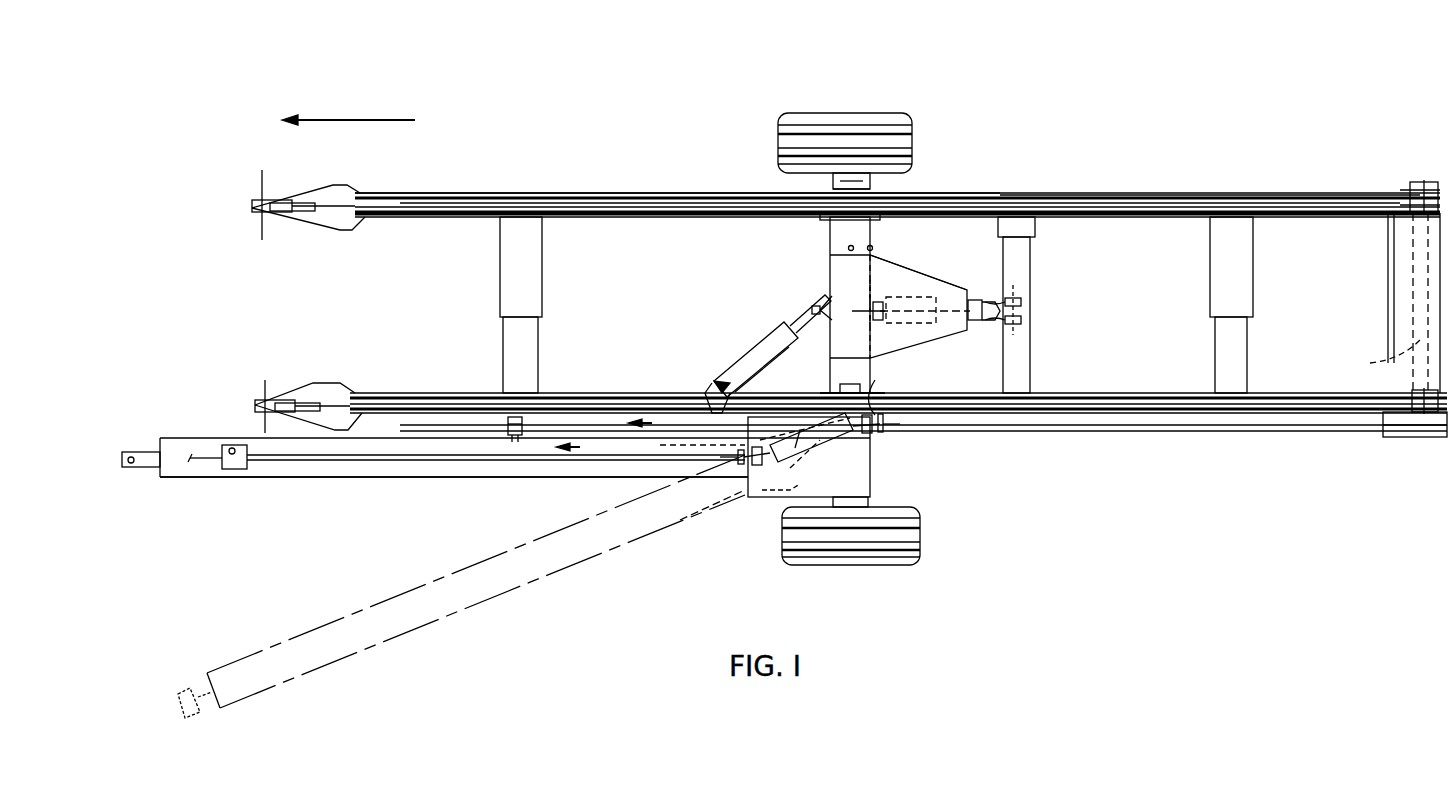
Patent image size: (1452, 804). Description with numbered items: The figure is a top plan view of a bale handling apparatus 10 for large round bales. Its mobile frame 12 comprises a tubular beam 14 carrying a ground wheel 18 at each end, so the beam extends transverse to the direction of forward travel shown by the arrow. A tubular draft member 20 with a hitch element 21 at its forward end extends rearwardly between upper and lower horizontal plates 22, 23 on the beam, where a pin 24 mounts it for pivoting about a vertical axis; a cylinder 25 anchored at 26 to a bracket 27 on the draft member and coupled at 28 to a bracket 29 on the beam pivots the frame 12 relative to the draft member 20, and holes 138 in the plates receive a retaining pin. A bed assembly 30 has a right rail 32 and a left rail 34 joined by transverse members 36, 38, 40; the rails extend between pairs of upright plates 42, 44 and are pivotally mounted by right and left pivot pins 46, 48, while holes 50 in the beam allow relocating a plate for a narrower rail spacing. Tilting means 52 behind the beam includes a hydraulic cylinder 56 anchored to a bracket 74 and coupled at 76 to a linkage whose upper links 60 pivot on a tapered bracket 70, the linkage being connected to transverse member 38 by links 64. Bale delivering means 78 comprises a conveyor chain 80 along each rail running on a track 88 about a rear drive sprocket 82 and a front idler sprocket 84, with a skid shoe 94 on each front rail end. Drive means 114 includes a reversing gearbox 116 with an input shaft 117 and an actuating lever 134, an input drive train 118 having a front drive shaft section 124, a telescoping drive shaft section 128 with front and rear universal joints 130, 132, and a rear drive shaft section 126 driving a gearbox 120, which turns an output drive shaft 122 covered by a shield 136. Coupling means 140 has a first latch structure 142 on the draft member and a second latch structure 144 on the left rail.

The bale handling apparatus 10 is at (968, 76).
The mobile frame 12 is at (768, 337).
The beam 14 is at (832, 236).
The ground wheel 18 is at (790, 118).
The draft member 20 is at (393, 473).
The hitch element 21 is at (140, 470).
The upper draft member mounting plate 22 is at (868, 484).
The lower draft member mounting plate 23 is at (810, 494).
The pin 24 is at (826, 428).
The cylinder 25 is at (765, 355).
The forward cylinder end pivot 26 is at (716, 378).
The bracket 27 is at (712, 384).
The piston end pivot 28 is at (817, 316).
The bracket 29 is at (820, 298).
The bed assembly 30 is at (1118, 190).
The right rail 32 is at (1215, 195).
The left rail 34 is at (1302, 392).
The transverse member 36 is at (504, 246).
The transverse member 38 is at (1024, 372).
The transverse member 40 is at (1250, 290).
The upright plates 42 is at (876, 205).
The upright plates 44 is at (872, 390).
The right pivot pin 46 is at (838, 190).
The left pivot pin 48 is at (840, 392).
The holes 50 is at (856, 246).
The tilting means 52 is at (962, 266).
The hydraulic cylinder 56 is at (932, 292).
The upper links 60 is at (990, 300).
The links 64 is at (1018, 298).
The tapered bracket 70 is at (905, 345).
The bracket 74 is at (870, 298).
The rear piston end pivot 76 is at (975, 322).
The bale delivering means 78 is at (420, 168).
The conveyor chain 80 is at (385, 220).
The rear drive sprocket 82 is at (1412, 185).
The front idler sprocket 84 is at (256, 208).
The track 88 is at (1316, 168).
The skid shoe 94 is at (324, 185).
The drive means 114 is at (1419, 458).
The reversing gearbox 116 is at (240, 468).
The input shaft 117 is at (196, 465).
The input drive train 118 is at (556, 458).
The gearbox 120 is at (1403, 425).
The output drive shaft 122 is at (1374, 360).
The front drive shaft section 124 is at (496, 462).
The rear drive shaft section 126 is at (1122, 427).
The telescoping drive shaft section 128 is at (838, 445).
The front universal joint 130 is at (755, 467).
The rear universal joint 132 is at (872, 436).
The actuating lever 134 is at (233, 446).
The shield 136 is at (740, 496).
The holes 138 is at (740, 444).
The coupling means 140 is at (625, 430).
The first latch structure 142 is at (583, 447).
The second latch structure 144 is at (493, 425).